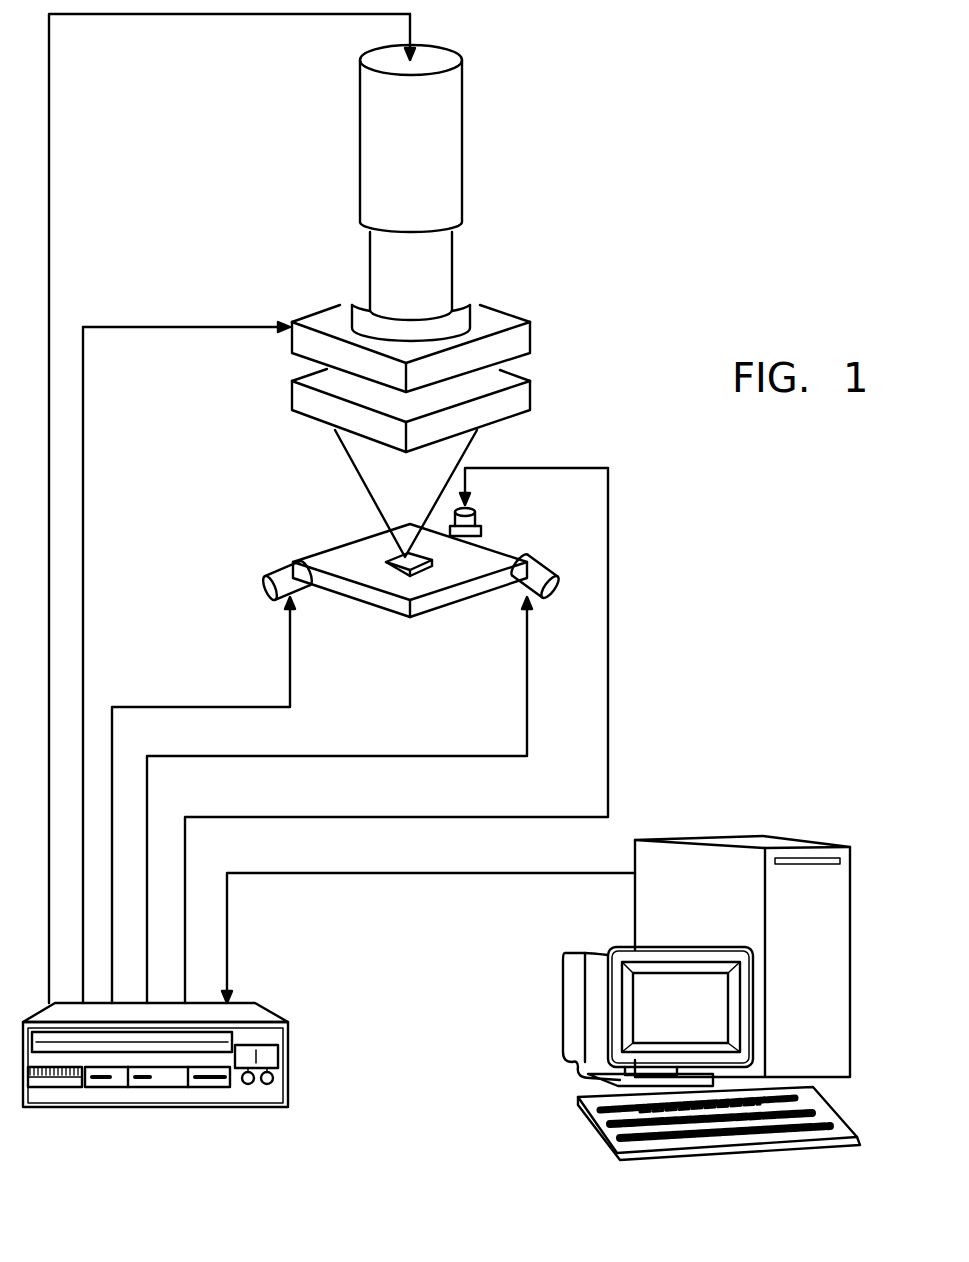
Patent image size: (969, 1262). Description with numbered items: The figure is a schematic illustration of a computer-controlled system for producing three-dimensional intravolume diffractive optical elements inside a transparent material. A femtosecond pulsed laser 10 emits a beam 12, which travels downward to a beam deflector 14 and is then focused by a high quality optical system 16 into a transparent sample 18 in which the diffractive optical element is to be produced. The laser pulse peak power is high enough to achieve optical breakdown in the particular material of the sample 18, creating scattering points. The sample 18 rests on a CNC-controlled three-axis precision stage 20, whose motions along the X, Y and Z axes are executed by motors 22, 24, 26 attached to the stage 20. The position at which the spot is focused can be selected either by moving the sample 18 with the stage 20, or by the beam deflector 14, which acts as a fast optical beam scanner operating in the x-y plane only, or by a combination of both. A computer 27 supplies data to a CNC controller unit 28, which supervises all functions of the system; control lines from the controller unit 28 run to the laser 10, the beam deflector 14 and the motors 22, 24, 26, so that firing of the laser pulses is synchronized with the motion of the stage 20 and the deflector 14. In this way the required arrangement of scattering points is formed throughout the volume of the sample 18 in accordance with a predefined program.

The femtosecond pulsed laser 10 is at (455, 126).
The beam 12 is at (425, 263).
The beam deflector 14 is at (526, 333).
The optical system 16 is at (526, 393).
The transparent sample 18 is at (395, 566).
The three-axis precision stage 20 is at (423, 582).
The motor 22 is at (287, 577).
The motor 24 is at (542, 576).
The motor 26 is at (478, 526).
The computer 27 is at (740, 840).
The CNC controller unit 28 is at (292, 1058).